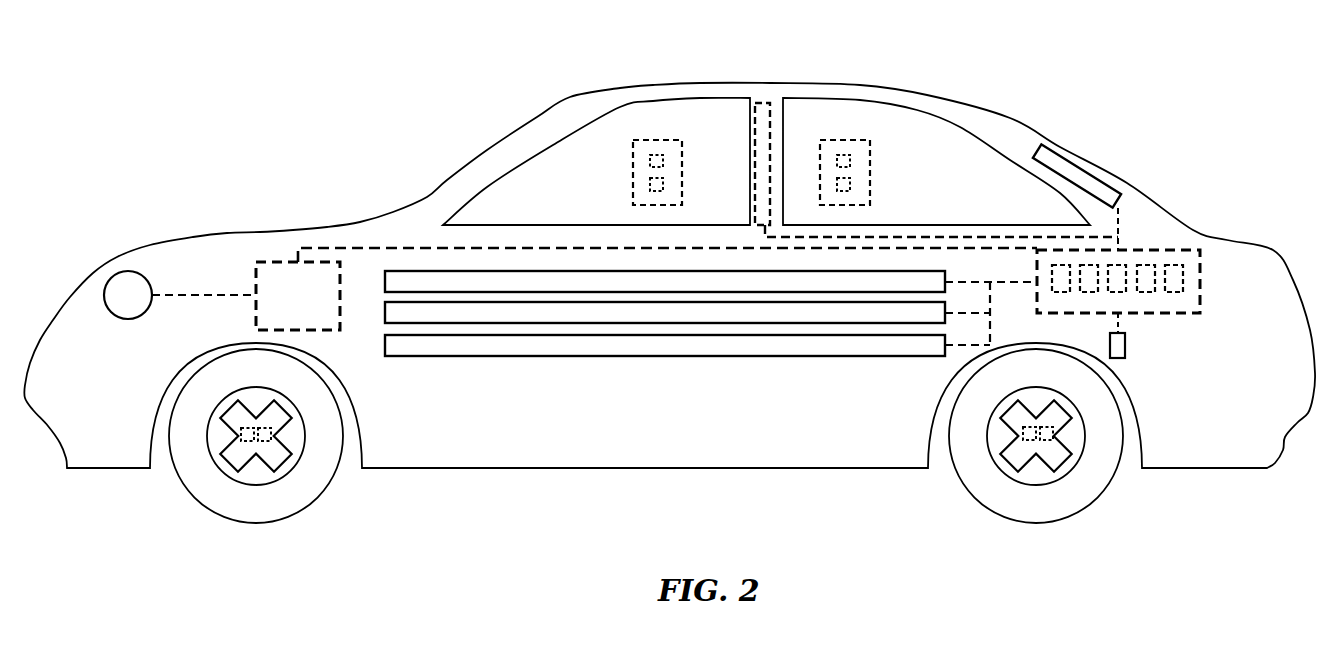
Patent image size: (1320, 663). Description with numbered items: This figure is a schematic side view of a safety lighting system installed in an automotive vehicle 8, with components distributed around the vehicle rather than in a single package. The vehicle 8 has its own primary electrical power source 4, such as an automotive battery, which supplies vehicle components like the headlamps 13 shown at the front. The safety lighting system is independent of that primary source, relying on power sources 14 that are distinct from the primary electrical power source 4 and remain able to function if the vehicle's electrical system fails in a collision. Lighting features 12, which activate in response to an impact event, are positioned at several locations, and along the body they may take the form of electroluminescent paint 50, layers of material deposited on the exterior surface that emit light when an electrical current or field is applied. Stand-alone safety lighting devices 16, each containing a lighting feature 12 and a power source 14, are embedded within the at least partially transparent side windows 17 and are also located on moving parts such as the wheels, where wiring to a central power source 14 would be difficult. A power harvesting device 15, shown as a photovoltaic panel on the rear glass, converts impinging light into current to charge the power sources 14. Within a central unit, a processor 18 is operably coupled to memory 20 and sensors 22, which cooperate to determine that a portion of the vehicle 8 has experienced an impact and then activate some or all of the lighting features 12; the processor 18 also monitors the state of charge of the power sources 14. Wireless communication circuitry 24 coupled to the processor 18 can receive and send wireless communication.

The primary electrical power source 4 is at (298, 296).
The automotive vehicle 8 is at (777, 44).
The lighting features 12 is at (766, 102).
The headlamps 13 is at (130, 305).
The power sources 14 is at (663, 190).
The power harvesting device 15 is at (1088, 172).
The safety lighting devices 16 is at (657, 140).
The side windows 17 is at (600, 154).
The processor 18 is at (1090, 293).
The memory 20 is at (1122, 264).
The sensors 22 is at (1145, 293).
The wireless communication circuitry 24 is at (1175, 264).
The electroluminescent paint 50 is at (578, 290).